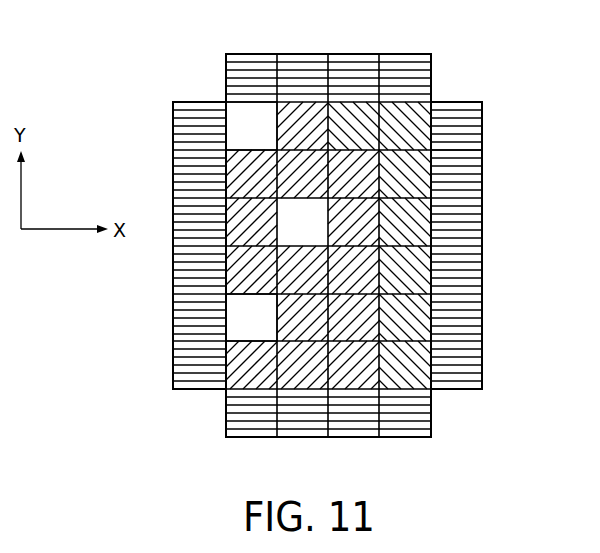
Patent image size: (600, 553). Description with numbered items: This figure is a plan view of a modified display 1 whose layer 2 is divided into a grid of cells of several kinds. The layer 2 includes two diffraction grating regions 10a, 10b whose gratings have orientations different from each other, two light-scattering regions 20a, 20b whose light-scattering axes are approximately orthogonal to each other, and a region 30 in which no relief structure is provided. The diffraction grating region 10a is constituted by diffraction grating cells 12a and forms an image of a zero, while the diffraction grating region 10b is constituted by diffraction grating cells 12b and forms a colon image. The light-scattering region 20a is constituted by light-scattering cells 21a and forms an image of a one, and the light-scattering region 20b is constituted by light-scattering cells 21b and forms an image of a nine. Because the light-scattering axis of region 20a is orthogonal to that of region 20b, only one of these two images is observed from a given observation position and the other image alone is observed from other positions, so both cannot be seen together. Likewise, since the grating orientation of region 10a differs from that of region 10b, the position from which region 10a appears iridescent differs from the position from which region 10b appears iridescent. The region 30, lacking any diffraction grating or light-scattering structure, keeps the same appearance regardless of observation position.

The display 1 is at (448, 50).
The layer 2 is at (474, 130).
The diffraction grating region 10a is at (459, 182).
The diffraction grating region 10b is at (310, 124).
The diffraction grating cells 12a is at (187, 368).
The diffraction grating cells 12b is at (280, 313).
The light-scattering region 20a is at (436, 106).
The light-scattering region 20b is at (253, 374).
The light-scattering cells 21a is at (432, 380).
The light-scattering cells 21b is at (232, 176).
The region 30 is at (240, 120).